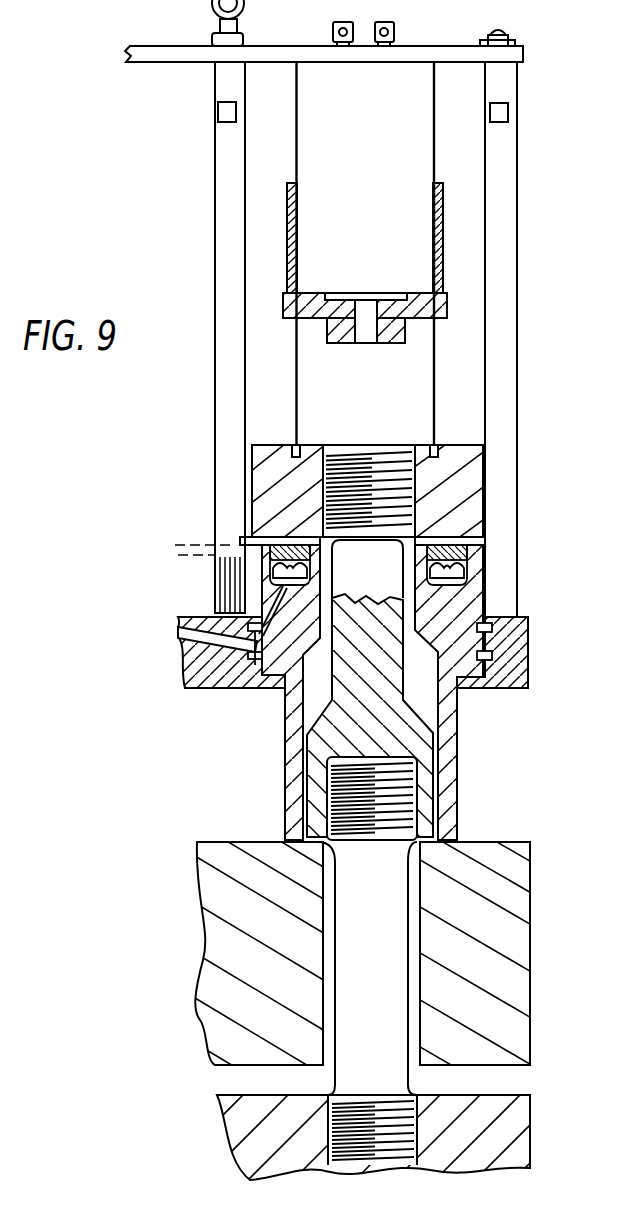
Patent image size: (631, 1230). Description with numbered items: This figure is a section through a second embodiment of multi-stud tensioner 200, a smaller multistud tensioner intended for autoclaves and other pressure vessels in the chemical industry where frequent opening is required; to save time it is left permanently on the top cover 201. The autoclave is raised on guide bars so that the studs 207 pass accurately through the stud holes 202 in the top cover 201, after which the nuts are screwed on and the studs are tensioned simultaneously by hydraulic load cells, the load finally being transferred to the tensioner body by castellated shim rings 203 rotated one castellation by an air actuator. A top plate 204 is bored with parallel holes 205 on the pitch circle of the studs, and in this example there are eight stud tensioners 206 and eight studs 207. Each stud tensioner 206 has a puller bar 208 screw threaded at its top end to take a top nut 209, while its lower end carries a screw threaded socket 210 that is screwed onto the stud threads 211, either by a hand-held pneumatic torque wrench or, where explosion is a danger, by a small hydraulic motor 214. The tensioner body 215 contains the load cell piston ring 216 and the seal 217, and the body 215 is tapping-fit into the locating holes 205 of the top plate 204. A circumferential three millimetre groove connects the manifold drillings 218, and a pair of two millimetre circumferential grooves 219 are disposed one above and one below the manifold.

The multi-stud tensioner 200 is at (509, 445).
The top cover 201 is at (500, 903).
The stud holes 202 is at (318, 932).
The castellated shim rings 203 is at (460, 518).
The top plate 204 is at (527, 661).
The parallel holes 205 is at (470, 617).
The stud tensioner 206 is at (416, 705).
The stud 207 is at (388, 890).
The puller bar 208 is at (313, 740).
The top nut 209 is at (377, 498).
The screw threaded socket 210 is at (423, 797).
The stud threads 211 is at (327, 810).
The hydraulic motor 214 is at (402, 163).
The tensioner body 215 is at (298, 607).
The load cell piston ring 216 is at (286, 539).
The seal 217 is at (470, 557).
The manifold drillings 218 is at (180, 688).
The circumferential grooves 219 is at (492, 627).